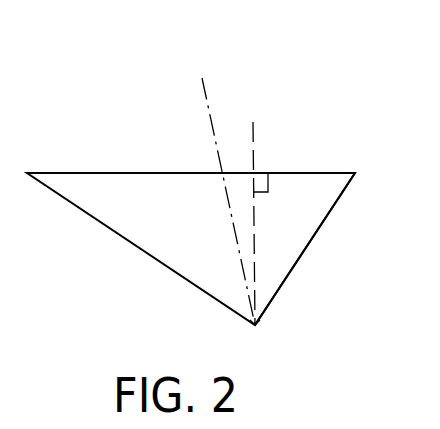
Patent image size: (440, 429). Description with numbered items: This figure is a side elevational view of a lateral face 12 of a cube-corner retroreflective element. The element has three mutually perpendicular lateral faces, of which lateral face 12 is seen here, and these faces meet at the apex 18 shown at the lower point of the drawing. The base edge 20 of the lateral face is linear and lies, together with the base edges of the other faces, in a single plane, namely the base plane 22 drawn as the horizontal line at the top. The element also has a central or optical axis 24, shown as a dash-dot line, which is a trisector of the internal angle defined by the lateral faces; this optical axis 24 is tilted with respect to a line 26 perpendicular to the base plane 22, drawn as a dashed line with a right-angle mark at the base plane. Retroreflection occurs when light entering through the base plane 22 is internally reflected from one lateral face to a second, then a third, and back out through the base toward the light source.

The lateral face 12 is at (112, 193).
The apex 18 is at (257, 327).
The base edge 20 is at (330, 172).
The base plane 22 is at (165, 173).
The optical axis 24 is at (205, 96).
The line perpendicular to the base plane 26 is at (253, 128).